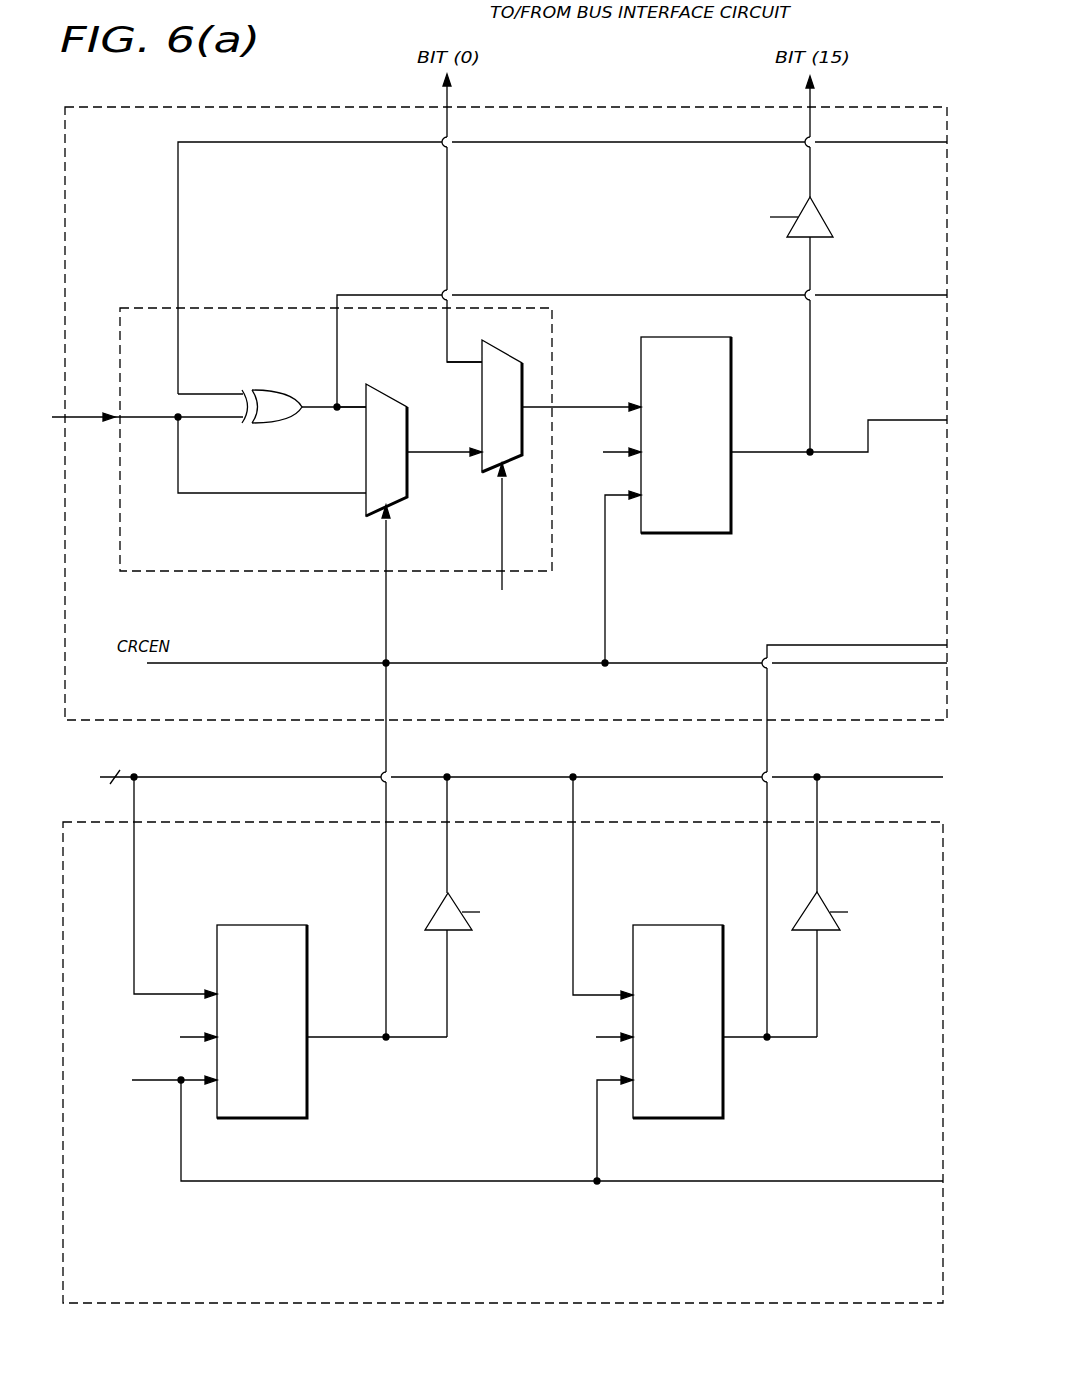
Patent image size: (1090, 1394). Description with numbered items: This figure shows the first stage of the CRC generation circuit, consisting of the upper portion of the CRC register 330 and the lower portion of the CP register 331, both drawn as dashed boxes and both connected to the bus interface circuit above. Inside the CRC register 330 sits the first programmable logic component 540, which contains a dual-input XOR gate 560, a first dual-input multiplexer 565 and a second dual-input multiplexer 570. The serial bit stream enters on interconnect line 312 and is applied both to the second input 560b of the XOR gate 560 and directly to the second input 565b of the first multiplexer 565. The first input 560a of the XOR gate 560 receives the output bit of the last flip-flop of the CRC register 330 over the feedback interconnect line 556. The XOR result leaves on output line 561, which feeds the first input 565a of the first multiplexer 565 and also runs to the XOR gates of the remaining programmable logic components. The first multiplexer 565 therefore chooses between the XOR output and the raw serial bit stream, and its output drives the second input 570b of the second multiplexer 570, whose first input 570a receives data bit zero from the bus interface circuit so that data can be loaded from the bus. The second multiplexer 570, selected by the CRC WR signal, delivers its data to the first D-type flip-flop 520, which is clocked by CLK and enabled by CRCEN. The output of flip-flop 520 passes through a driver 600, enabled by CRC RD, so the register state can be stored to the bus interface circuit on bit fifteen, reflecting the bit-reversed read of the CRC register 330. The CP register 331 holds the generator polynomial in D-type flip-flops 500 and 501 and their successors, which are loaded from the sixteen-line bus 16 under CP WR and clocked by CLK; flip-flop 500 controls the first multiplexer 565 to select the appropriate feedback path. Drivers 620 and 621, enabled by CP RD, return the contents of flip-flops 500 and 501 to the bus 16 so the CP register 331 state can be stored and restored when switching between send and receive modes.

The CRC register 330 is at (313, 107).
The CP register 331 is at (362, 1303).
The first programmable logic component 540 is at (144, 307).
The interconnect line 312 is at (72, 417).
The feedback interconnect line 556 is at (178, 165).
The output line 561 is at (386, 295).
The XOR gate 560 is at (268, 390).
The first input of XOR gate 560a is at (212, 392).
The second input of XOR gate 560b is at (212, 422).
The first dual-input multiplexer 565 is at (393, 517).
The first input of first multiplexer 565a is at (358, 414).
The second input of first multiplexer 565b is at (358, 498).
The second dual-input multiplexer 570 is at (498, 355).
The first input of second multiplexer 570a is at (456, 368).
The second input of second multiplexer 570b is at (459, 458).
The first D-type flip-flop 520 is at (680, 534).
The driver 600 is at (824, 217).
The bus 16 is at (520, 772).
The D-type flip-flop 500 is at (270, 925).
The D-type flip-flop 501 is at (678, 925).
The driver 620 is at (458, 933).
The driver 621 is at (828, 933).